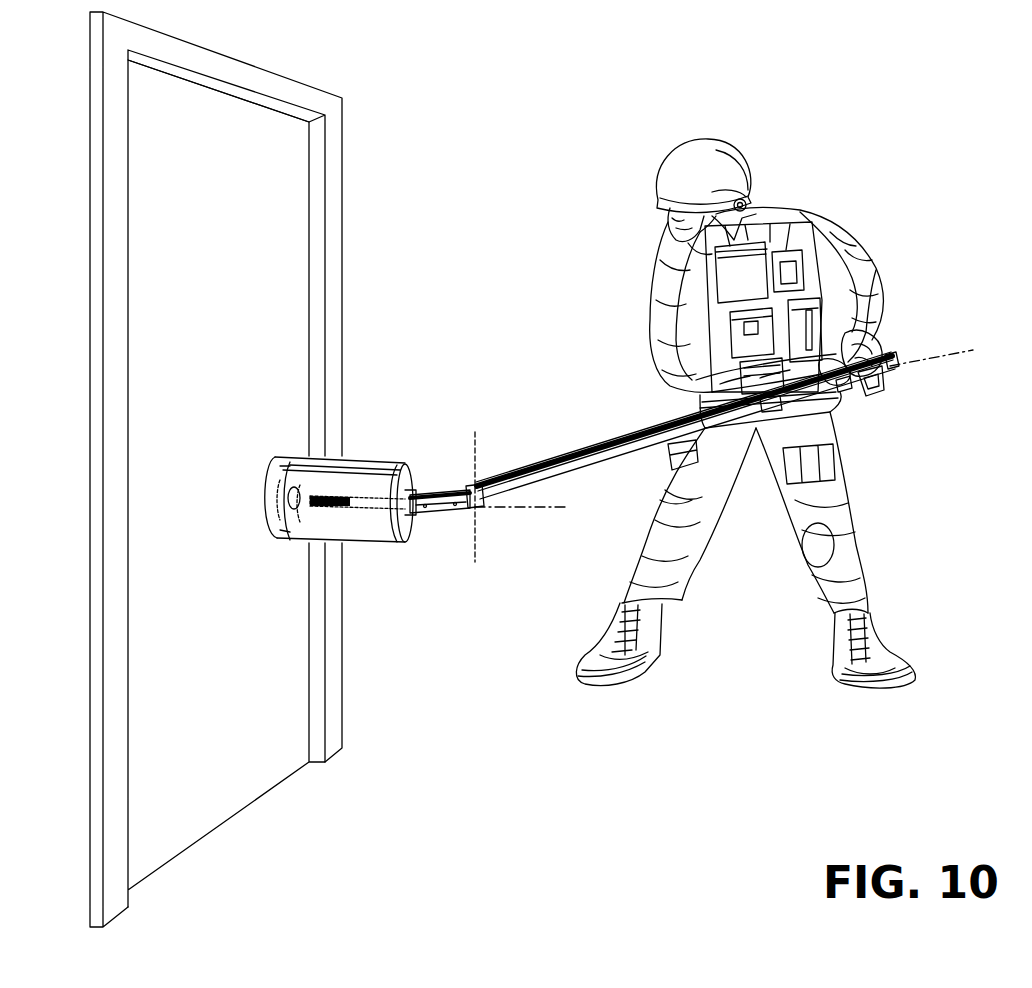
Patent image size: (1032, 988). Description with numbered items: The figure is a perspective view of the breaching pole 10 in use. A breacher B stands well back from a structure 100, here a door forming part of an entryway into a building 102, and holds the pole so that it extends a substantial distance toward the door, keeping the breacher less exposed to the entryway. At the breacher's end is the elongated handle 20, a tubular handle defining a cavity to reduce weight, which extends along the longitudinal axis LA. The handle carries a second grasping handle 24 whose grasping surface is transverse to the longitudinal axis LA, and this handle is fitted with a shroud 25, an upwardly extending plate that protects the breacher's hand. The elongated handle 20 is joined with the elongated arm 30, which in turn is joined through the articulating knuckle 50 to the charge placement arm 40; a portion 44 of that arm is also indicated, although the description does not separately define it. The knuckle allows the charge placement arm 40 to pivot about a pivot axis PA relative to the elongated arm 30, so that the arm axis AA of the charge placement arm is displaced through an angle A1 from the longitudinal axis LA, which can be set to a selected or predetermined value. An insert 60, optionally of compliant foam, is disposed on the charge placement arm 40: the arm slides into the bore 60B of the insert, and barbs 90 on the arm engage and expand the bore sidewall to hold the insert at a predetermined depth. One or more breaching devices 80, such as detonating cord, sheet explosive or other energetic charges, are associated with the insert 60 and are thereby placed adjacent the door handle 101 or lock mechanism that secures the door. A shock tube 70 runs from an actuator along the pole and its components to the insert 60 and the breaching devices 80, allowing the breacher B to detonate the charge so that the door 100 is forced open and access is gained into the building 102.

The breaching pole 10 is at (594, 411).
The elongated handle 20 is at (880, 398).
The second grasping handle 24 is at (898, 366).
The shroud 25 is at (842, 388).
The elongated arm 30 is at (632, 432).
The charge placement arm 40 is at (433, 520).
The bar connector 44 is at (402, 520).
The articulating knuckle 50 is at (465, 485).
The insert 60 is at (360, 526).
The bore 60B is at (401, 470).
The shock tube 70 is at (334, 464).
The breaching device 80 is at (290, 463).
The barbs 90 is at (349, 498).
The structure 100 is at (285, 203).
The door handle 101 is at (299, 535).
The building 102 is at (302, 59).
The breacher B is at (814, 218).
The pivot axis PA is at (478, 442).
The arm axis AA is at (556, 508).
The angle A1 is at (478, 540).
The longitudinal axis LA is at (950, 355).